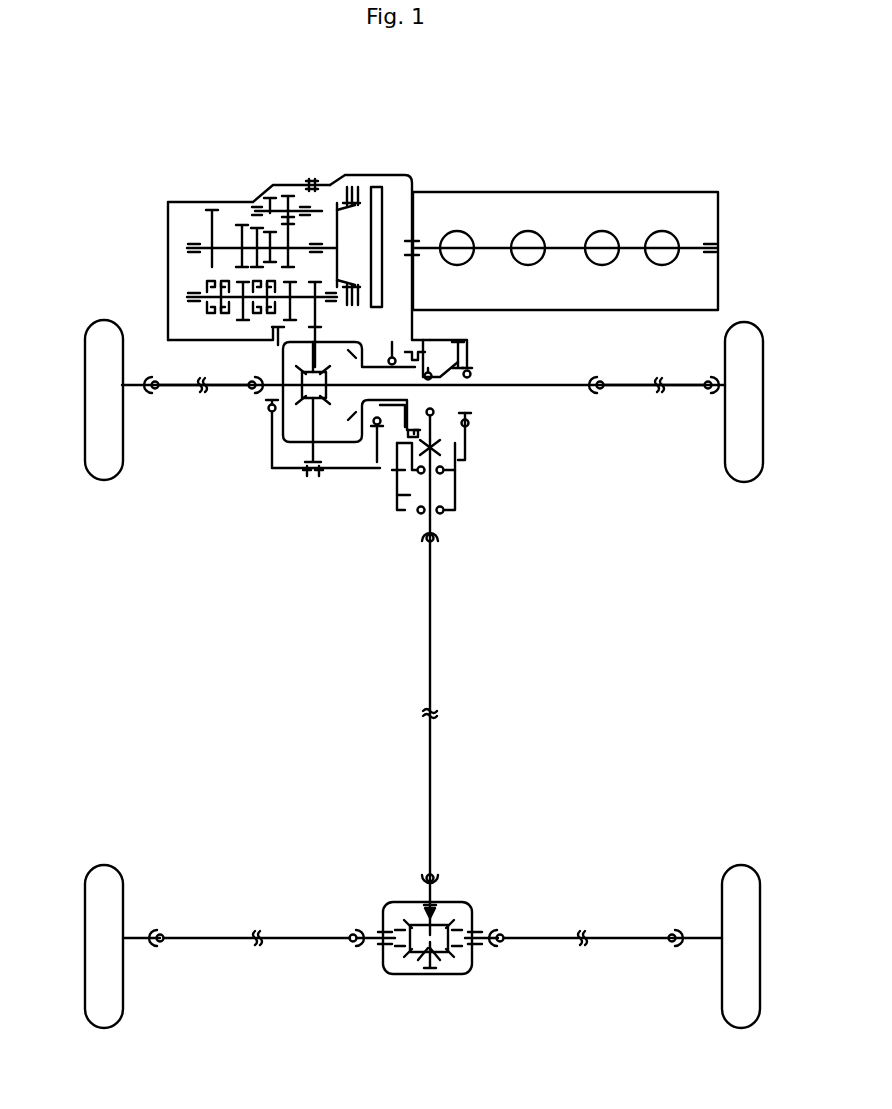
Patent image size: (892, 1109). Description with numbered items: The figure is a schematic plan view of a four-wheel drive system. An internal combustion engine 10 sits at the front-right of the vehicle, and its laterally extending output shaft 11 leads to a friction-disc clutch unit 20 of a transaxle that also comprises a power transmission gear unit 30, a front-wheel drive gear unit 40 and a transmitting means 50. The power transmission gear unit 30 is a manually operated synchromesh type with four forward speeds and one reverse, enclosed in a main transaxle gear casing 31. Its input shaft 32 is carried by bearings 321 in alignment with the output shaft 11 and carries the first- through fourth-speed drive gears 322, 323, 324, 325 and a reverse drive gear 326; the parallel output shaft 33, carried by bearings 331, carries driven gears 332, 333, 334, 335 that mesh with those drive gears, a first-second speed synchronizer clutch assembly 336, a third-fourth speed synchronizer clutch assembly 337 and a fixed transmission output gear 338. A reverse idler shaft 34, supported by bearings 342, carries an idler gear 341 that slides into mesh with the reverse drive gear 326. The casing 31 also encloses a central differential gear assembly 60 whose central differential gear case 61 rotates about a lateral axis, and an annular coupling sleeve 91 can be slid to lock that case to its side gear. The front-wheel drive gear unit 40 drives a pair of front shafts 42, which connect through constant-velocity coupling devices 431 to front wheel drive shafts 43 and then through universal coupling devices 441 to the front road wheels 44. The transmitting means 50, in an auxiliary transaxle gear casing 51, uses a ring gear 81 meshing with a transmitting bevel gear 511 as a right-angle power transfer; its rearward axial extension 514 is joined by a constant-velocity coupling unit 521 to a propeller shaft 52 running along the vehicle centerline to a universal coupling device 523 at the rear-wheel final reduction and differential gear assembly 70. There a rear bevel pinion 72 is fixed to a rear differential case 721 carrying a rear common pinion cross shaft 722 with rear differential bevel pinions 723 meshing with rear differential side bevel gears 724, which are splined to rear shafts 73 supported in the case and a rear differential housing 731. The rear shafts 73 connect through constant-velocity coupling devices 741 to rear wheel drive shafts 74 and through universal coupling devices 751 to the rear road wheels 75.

The internal combustion engine 10 is at (586, 190).
The output shaft 11 is at (430, 246).
The clutch unit 20 is at (398, 190).
The power transmission gear unit 30 is at (178, 215).
The main transaxle gear casing 31 is at (168, 212).
The input shaft 32 is at (208, 240).
The bearings 321 is at (192, 248).
The first-speed drive gear 322 is at (256, 205).
The second-speed drive gear 323 is at (240, 222).
The third-speed drive gear 324 is at (255, 226).
The fourth-speed drive gear 325 is at (266, 232).
The reverse drive gear 326 is at (284, 222).
The output shaft 33 is at (198, 296).
The bearings 331 is at (192, 300).
The first-speed driven gear 332 is at (264, 320).
The second-speed driven gear 333 is at (260, 340).
The third-speed driven gear 334 is at (218, 318).
The fourth-speed driven gear 335 is at (145, 340).
The first-second speed synchronizer clutch assembly 336 is at (250, 390).
The third-fourth speed synchronizer clutch assembly 337 is at (156, 392).
The transmission output gear 338 is at (345, 278).
The reverse idler shaft 34 is at (318, 180).
The idler gear 341 is at (306, 186).
The bearings 342 is at (290, 194).
The front-wheel drive gear unit 40 is at (283, 470).
The front shafts 42 is at (254, 395).
The front wheel drive shafts 43 is at (195, 392).
The constant-velocity coupling devices 431 is at (245, 400).
The front road wheels 44 is at (90, 340).
The universal coupling devices 441 is at (172, 392).
The transmitting means 50 is at (478, 462).
The auxiliary transaxle gear casing 51 is at (452, 452).
The transmitting bevel gear 511 is at (445, 470).
The rearward axial extension 514 is at (410, 492).
The propeller shaft 52 is at (433, 744).
The constant-velocity coupling unit 521 is at (422, 545).
The universal coupling device 523 is at (440, 880).
The central differential gear assembly 60 is at (300, 460).
The central differential gear case 61 is at (335, 455).
The rear-wheel final reduction and differential gear assembly 70 is at (465, 898).
The rear bevel pinion 72 is at (420, 920).
The rear differential case 721 is at (440, 952).
The rear common pinion cross shaft 722 is at (412, 950).
The rear differential bevel pinions 723 is at (425, 960).
The rear differential side bevel gears 724 is at (450, 952).
The rear shafts 73 is at (368, 944).
The rear differential housing 731 is at (435, 975).
The rear wheel drive shafts 74 is at (280, 942).
The constant-velocity coupling devices 741 is at (348, 932).
The rear road wheels 75 is at (106, 866).
The universal coupling devices 751 is at (168, 930).
The ring gear 81 is at (450, 347).
The annular coupling sleeve 91 is at (430, 435).